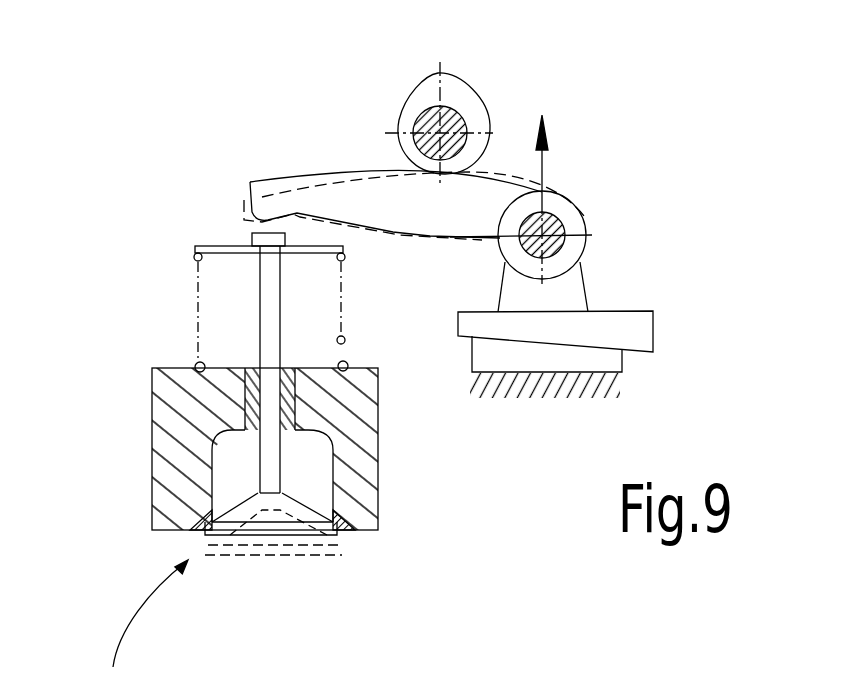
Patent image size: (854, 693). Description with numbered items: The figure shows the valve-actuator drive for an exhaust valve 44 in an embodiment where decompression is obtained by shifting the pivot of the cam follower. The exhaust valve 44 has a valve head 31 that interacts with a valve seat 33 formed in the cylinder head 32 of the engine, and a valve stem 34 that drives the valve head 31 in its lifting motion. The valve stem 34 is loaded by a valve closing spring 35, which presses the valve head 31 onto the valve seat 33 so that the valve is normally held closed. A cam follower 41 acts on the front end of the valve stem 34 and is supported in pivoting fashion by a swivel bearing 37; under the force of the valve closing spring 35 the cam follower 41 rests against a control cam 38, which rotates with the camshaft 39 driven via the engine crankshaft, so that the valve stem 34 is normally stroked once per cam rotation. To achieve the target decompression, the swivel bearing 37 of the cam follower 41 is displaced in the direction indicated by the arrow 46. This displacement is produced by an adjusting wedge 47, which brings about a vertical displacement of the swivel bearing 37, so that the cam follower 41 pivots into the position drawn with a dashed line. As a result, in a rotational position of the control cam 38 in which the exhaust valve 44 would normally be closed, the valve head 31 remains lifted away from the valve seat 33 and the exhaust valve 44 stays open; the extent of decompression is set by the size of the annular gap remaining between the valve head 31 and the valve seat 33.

The valve head 31 is at (248, 522).
The cylinder head 32 is at (362, 453).
The valve seat 33 is at (345, 533).
The valve stem 34 is at (268, 308).
The valve closing spring 35 is at (345, 338).
The swivel bearing 37 is at (557, 232).
The control cam 38 is at (453, 99).
The camshaft 39 is at (467, 125).
The cam follower 41 is at (345, 200).
The exhaust valve 44 is at (145, 626).
The arrow 46 is at (547, 143).
The adjusting wedge 47 is at (632, 328).